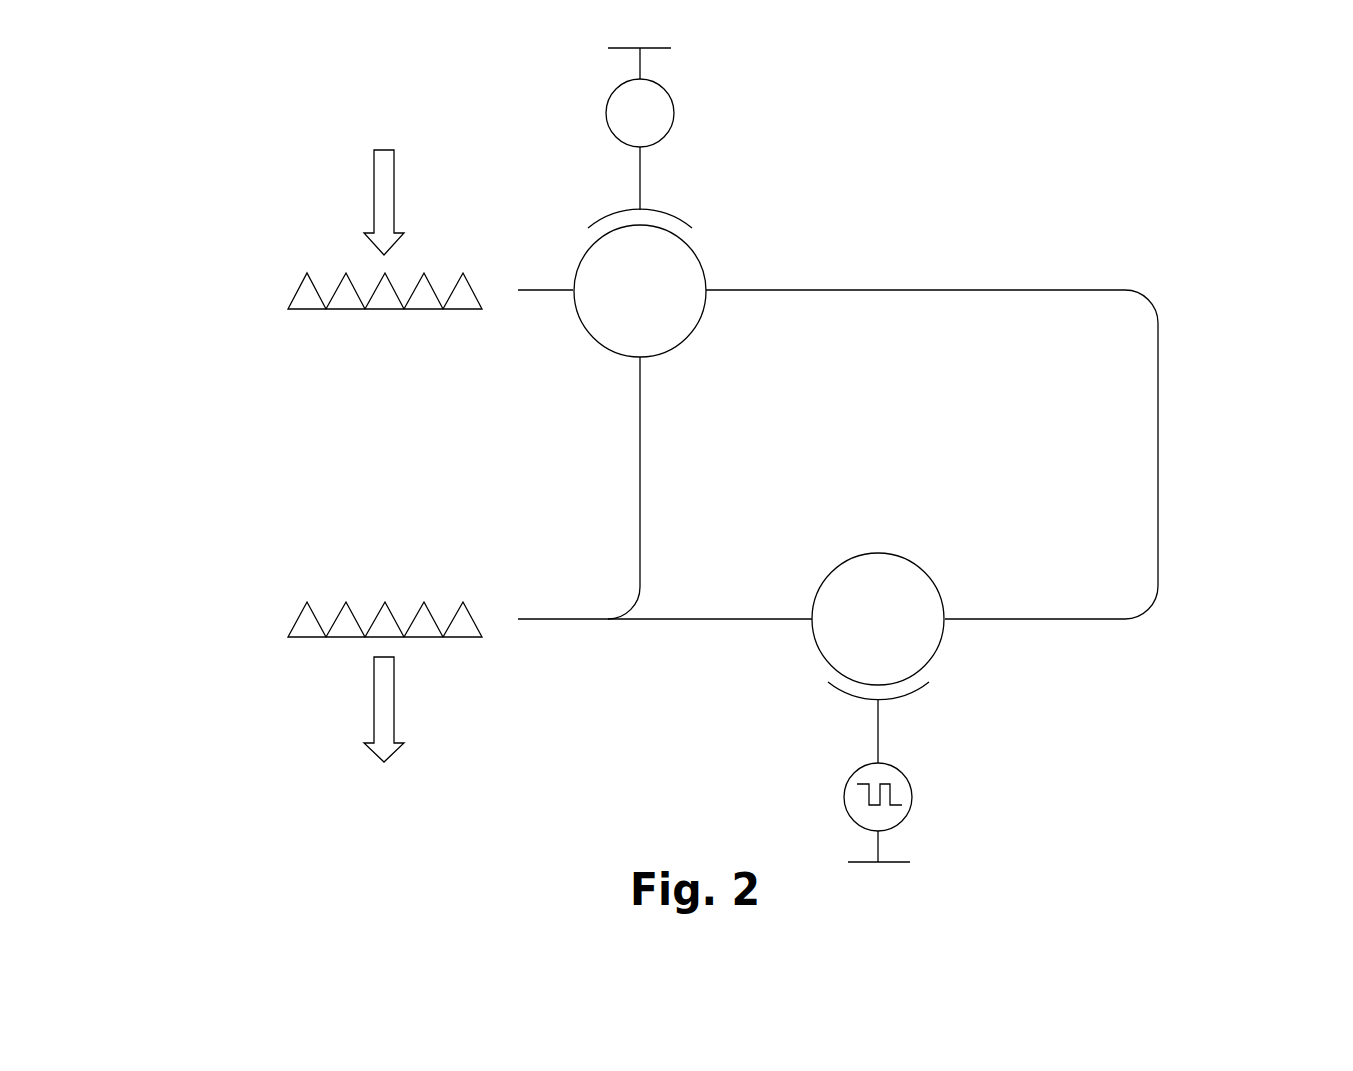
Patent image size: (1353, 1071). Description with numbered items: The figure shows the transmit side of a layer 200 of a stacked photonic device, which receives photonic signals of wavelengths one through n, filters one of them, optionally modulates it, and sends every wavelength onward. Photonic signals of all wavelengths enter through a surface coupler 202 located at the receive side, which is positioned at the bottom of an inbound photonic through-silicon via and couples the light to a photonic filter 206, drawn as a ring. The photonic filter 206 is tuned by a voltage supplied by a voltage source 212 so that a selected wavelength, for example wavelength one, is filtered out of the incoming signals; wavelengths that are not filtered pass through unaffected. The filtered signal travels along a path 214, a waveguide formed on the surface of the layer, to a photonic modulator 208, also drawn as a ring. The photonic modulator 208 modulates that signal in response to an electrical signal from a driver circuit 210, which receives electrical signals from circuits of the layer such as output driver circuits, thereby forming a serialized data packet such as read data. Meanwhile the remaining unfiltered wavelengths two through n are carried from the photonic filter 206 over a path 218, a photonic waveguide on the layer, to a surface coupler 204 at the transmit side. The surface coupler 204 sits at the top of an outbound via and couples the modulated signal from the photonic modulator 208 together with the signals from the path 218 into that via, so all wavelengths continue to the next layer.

The transmit side of a layer 200 is at (1052, 76).
The surface coupler 202 is at (298, 287).
The surface coupler 204 is at (296, 614).
The photonic filter 206 is at (589, 338).
The photonic modulator 208 is at (937, 653).
The driver circuit 210 is at (912, 797).
The voltage source 212 is at (674, 112).
The path 214 is at (1160, 380).
The path 218 is at (640, 485).